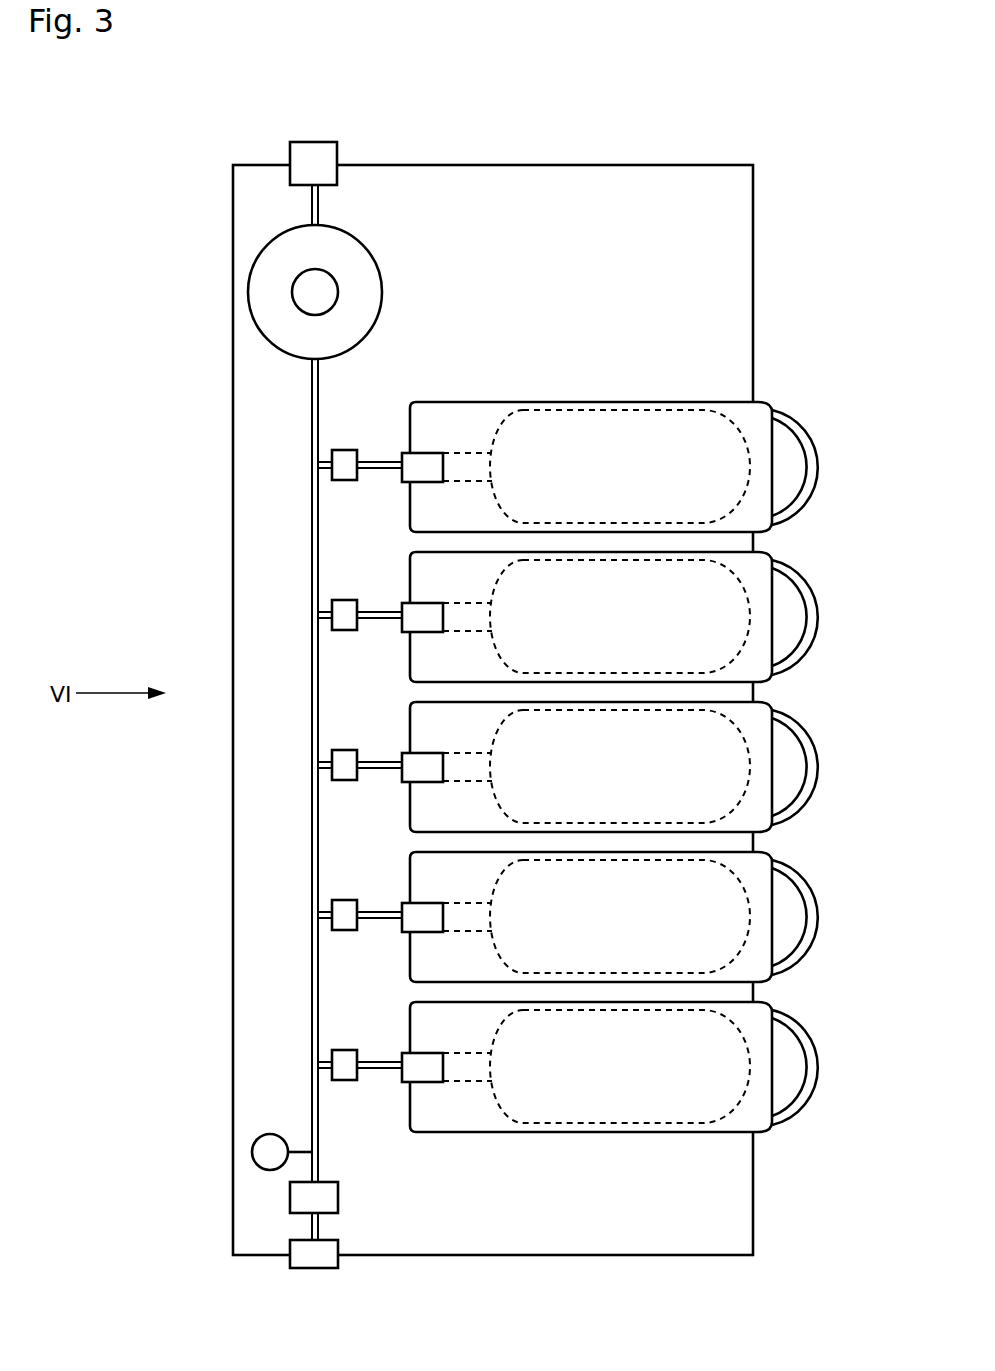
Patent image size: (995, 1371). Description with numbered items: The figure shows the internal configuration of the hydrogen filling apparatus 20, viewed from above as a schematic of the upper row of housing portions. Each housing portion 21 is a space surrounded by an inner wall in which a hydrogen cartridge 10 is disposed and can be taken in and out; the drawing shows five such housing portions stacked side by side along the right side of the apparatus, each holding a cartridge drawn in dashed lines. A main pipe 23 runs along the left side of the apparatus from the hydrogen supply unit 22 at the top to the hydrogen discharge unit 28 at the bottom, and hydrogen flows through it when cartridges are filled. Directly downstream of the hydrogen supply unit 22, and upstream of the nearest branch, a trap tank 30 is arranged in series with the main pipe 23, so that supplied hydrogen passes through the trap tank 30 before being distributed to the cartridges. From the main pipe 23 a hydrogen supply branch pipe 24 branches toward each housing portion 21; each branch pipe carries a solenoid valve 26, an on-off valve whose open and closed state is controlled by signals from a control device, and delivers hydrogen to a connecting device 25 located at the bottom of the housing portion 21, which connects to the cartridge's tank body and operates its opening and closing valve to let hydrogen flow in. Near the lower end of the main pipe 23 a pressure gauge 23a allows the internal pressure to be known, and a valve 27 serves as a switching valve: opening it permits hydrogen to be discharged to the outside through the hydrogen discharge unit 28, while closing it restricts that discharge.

The hydrogen cartridge 10 is at (799, 414).
The hydrogen filling apparatus 20 is at (729, 101).
The housing portion 21 is at (410, 518).
The hydrogen supply unit 22 is at (316, 152).
The main pipe 23 is at (310, 410).
The pressure gauge 23a is at (252, 1152).
The hydrogen supply branch pipe 24 is at (388, 461).
The connecting device 25 is at (404, 482).
The solenoid valve 26 is at (345, 481).
The valve 27 is at (296, 1200).
The hydrogen discharge unit 28 is at (312, 1258).
The trap tank 30 is at (370, 224).